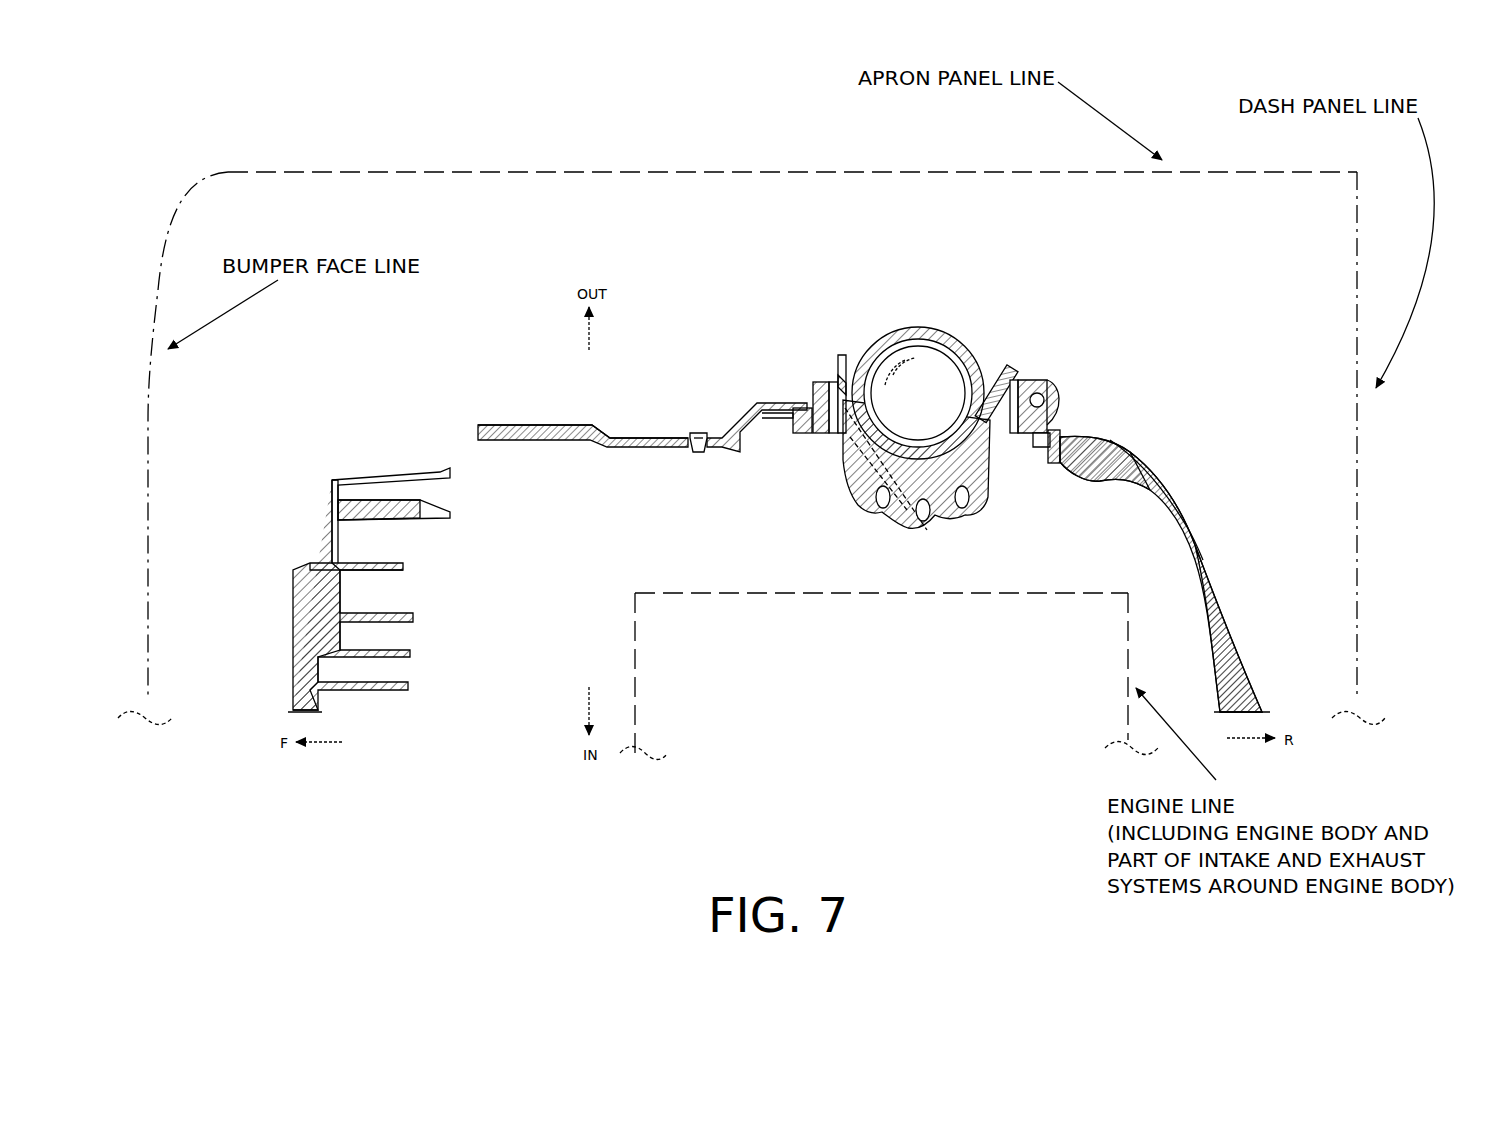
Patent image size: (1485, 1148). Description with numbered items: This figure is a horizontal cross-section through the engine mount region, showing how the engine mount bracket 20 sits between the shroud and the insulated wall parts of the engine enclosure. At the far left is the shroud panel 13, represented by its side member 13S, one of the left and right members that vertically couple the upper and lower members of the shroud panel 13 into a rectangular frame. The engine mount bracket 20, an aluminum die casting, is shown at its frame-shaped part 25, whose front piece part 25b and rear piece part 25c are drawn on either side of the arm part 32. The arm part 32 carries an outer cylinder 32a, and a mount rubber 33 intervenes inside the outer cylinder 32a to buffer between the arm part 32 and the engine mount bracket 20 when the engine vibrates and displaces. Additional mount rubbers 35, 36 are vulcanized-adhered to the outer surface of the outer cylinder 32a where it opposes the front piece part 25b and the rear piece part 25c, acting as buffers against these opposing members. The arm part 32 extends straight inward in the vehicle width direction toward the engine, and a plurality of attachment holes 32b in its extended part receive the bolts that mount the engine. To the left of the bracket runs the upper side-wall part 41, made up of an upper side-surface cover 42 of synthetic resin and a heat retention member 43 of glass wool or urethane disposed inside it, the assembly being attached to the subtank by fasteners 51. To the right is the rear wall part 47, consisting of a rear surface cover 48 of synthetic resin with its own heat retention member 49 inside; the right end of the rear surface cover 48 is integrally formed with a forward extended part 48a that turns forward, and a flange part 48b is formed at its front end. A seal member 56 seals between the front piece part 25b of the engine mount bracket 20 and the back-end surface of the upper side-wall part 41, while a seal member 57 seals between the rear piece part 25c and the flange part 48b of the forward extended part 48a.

The shroud panel 13 is at (292, 644).
The side member 13S is at (366, 480).
The engine mount bracket 20 is at (815, 376).
The frame-shaped part 25 is at (1033, 374).
The front piece part 25b is at (812, 388).
The rear piece part 25c is at (1062, 395).
The arm part 32 is at (856, 500).
The outer cylinder 32a is at (932, 329).
The attachment holes 32b is at (883, 506).
The mount rubber 33 is at (935, 370).
The mount rubber 35 is at (840, 368).
The mount rubber 36 is at (1003, 392).
The upper side-wall part 41 is at (540, 425).
The upper side-surface cover 42 is at (583, 431).
The heat retention member 43 is at (627, 447).
The rear wall part 47 is at (1226, 605).
The rear surface cover 48 is at (1162, 498).
The forward extended part 48a is at (1118, 463).
The flange part 48b is at (1078, 481).
The heat retention member 49 is at (1208, 638).
The fasteners 51 is at (700, 452).
The seal member 56 is at (808, 433).
The seal member 57 is at (1052, 463).